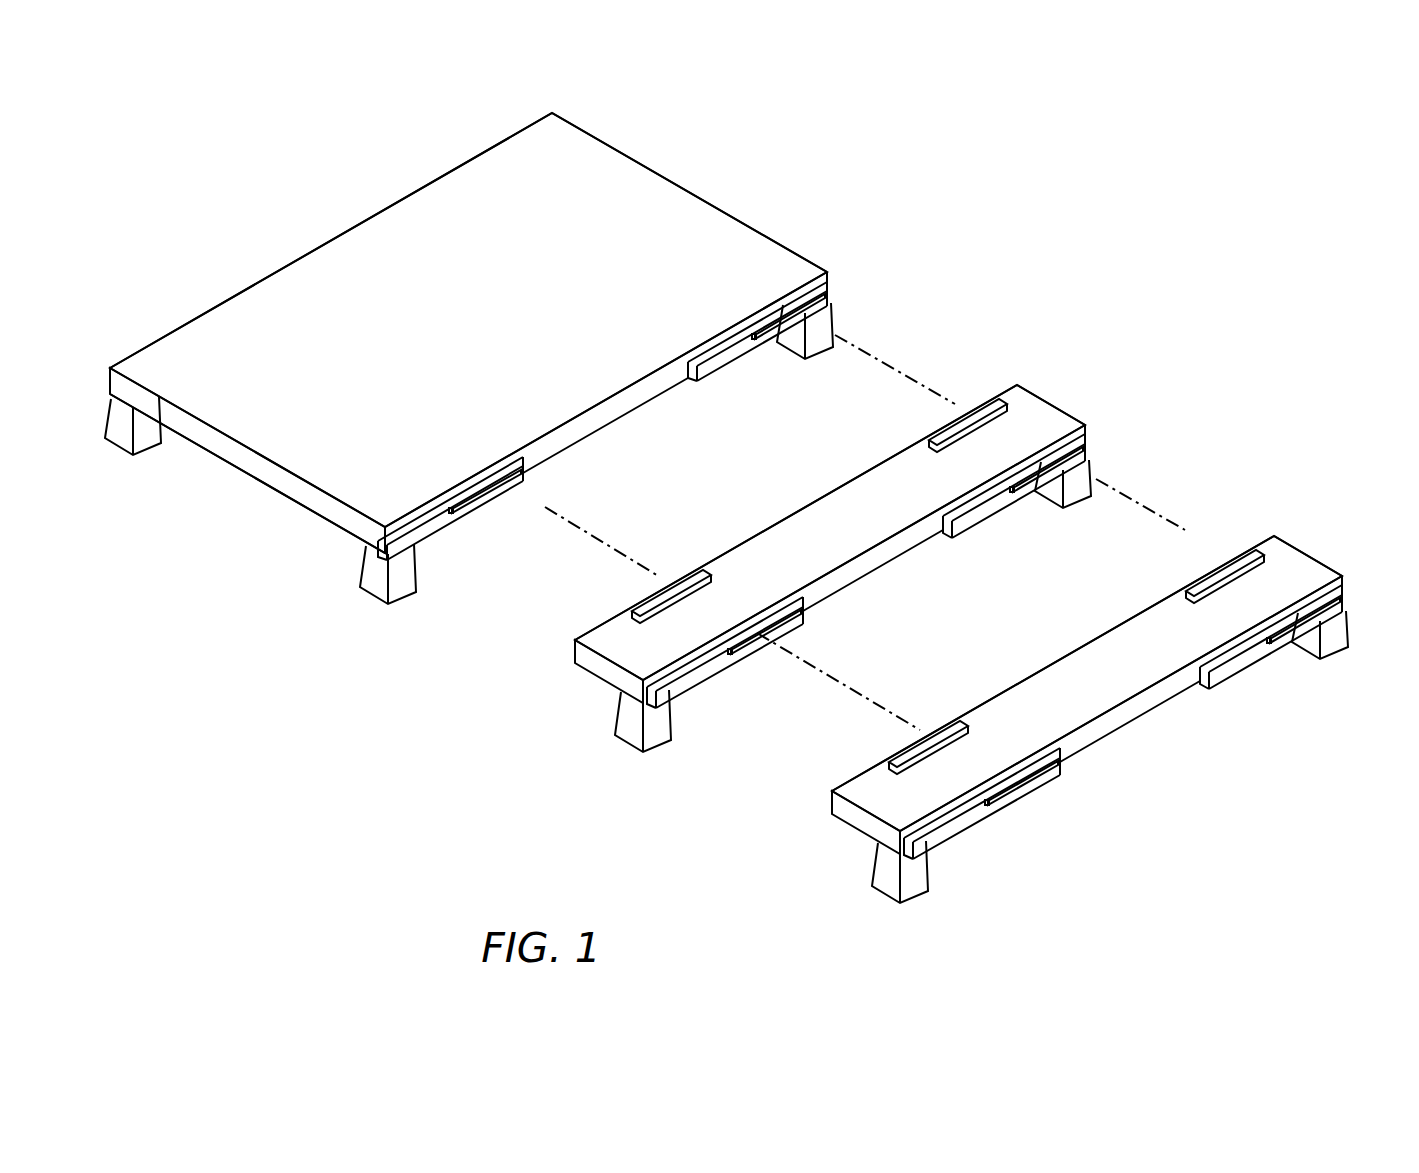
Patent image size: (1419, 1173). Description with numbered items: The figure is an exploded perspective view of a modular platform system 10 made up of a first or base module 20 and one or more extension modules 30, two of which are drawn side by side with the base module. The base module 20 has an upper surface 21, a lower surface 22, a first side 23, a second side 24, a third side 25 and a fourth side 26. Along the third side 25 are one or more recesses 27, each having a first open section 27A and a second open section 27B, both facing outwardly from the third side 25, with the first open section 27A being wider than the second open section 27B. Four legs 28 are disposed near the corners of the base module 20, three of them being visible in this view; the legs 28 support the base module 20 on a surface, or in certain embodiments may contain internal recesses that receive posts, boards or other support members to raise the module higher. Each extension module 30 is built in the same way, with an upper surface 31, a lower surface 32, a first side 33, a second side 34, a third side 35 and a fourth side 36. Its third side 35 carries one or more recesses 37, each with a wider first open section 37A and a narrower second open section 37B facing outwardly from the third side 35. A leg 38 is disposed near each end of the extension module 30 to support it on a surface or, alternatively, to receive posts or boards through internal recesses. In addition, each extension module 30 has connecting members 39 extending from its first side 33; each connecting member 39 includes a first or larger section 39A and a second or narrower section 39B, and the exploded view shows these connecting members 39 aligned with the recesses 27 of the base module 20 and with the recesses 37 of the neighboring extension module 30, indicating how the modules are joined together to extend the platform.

The modular platform system 10 is at (1080, 240).
The base module 20 is at (684, 162).
The upper surface 21 is at (457, 336).
The lower surface 22 is at (283, 498).
The first side 23 is at (330, 240).
The second side 24 is at (690, 193).
The third side 25 is at (645, 395).
The fourth side 26 is at (240, 457).
The recess 27 is at (735, 375).
The first open section 27A is at (703, 365).
The second open section 27B is at (810, 303).
The leg 28 is at (118, 437).
The extension module 30 is at (1060, 388).
The upper surface 31 is at (818, 561).
The lower surface 32 is at (828, 600).
The first side 33 is at (773, 522).
The second side 34 is at (1068, 410).
The third side 35 is at (900, 550).
The fourth side 36 is at (600, 668).
The recess 37 is at (995, 522).
The first open section 37A is at (960, 525).
The second open section 37B is at (1068, 450).
The leg 38 is at (1050, 500).
The connecting member 39 is at (905, 425).
The first or larger section 39A is at (985, 397).
The second or narrower section 39B is at (968, 397).